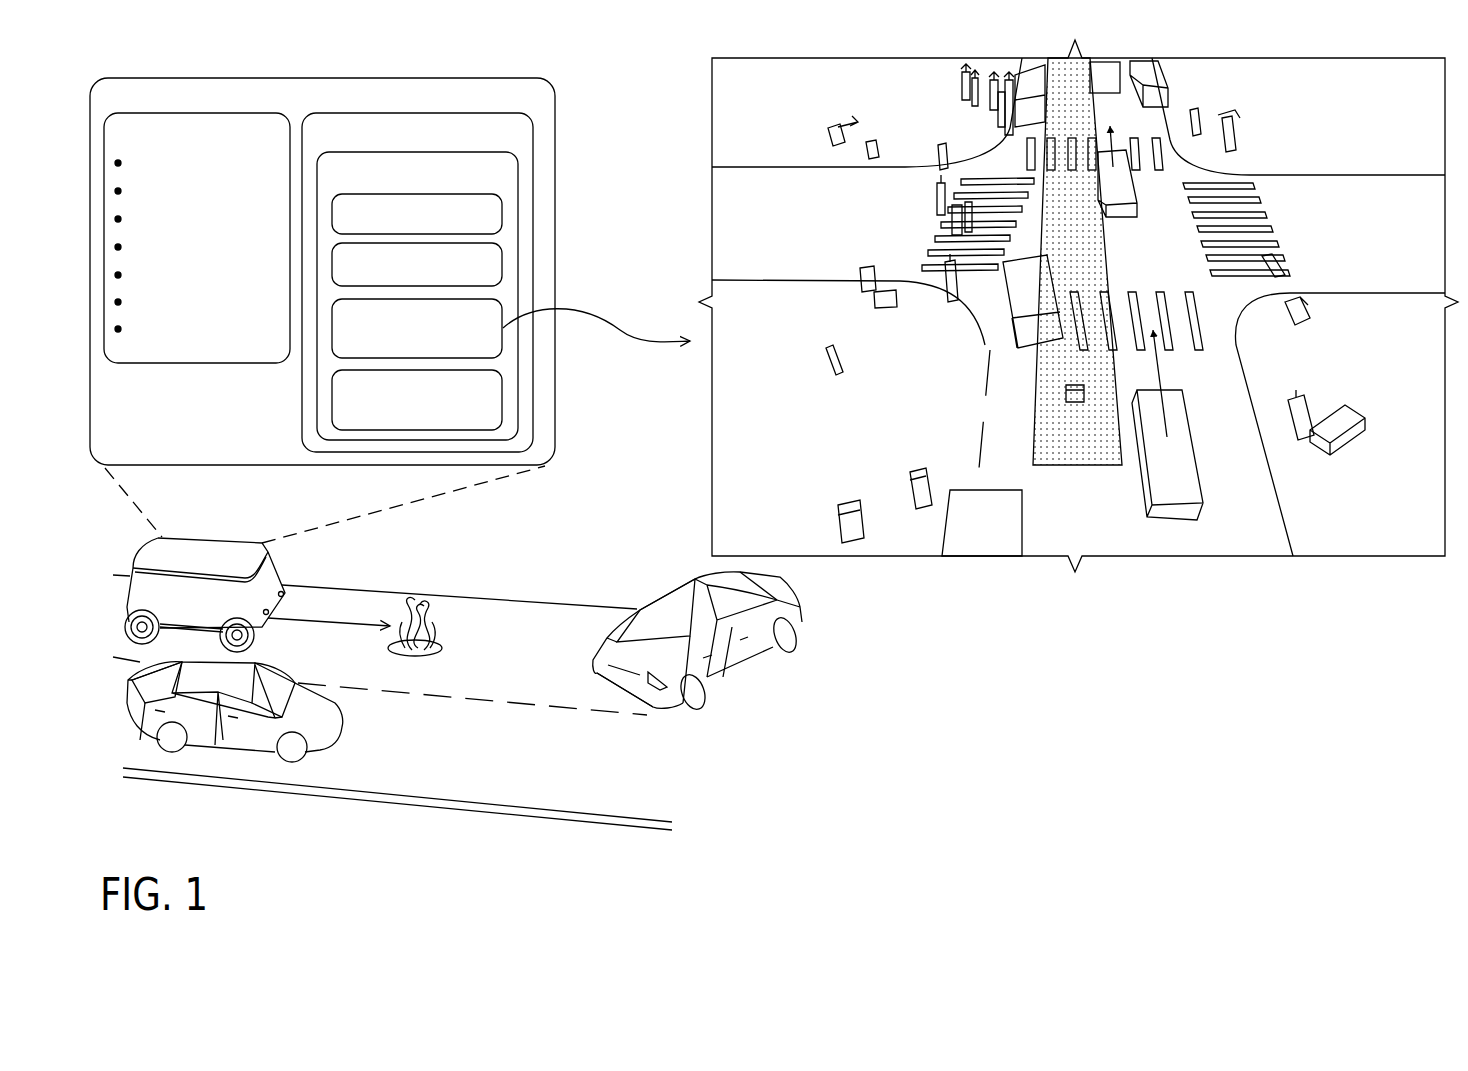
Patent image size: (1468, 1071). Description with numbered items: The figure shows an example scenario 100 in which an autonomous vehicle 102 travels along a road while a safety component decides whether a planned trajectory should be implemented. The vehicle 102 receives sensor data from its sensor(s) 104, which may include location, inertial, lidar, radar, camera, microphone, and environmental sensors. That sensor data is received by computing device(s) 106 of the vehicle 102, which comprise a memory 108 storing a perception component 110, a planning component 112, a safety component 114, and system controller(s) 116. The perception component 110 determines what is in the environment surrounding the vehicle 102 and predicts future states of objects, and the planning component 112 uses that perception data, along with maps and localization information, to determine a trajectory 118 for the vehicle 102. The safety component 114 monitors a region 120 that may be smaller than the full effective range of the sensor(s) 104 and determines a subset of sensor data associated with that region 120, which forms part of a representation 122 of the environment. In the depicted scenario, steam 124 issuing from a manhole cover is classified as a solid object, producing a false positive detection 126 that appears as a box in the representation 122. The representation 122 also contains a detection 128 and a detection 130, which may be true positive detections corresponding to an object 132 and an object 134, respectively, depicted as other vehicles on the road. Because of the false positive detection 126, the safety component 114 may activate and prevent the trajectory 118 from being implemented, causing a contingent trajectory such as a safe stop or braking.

The example scenario 100 is at (352, 840).
The vehicle 102 is at (375, 106).
The sensor(s) 104 is at (258, 145).
The computing device(s) 106 is at (525, 145).
The memory 108 is at (472, 185).
The perception component 110 is at (484, 223).
The planning component 112 is at (475, 274).
The safety component 114 is at (464, 338).
The system controller(s) 116 is at (434, 423).
The trajectory 118 is at (308, 620).
The region 120 is at (1035, 386).
The representation 122 is at (1337, 557).
The steam 124 is at (449, 630).
The false positive detection 126 is at (1065, 403).
The detection 128 is at (1047, 311).
The detection 130 is at (1188, 485).
The object 132 is at (803, 625).
The object 134 is at (335, 730).